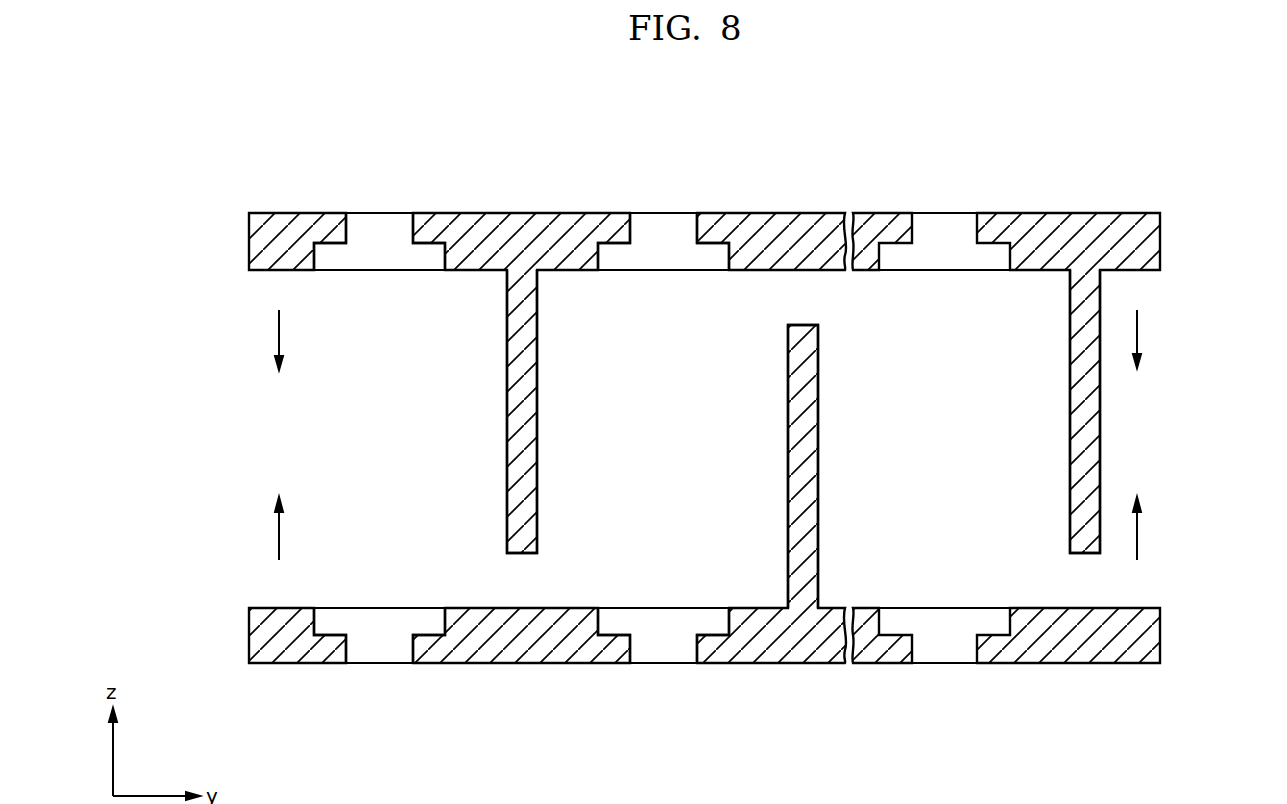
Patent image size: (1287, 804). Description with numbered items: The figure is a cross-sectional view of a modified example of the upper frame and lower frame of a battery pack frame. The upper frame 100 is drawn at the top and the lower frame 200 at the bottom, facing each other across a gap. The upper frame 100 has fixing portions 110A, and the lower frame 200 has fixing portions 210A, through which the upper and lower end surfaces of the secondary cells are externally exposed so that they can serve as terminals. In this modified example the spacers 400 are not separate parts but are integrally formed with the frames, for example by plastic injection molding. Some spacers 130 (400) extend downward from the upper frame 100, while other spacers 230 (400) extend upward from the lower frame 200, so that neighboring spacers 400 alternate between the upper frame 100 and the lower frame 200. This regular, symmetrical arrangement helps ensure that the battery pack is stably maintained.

The upper frame 100 is at (1148, 242).
The lower frame 200 is at (1145, 638).
The fixing portion 110A is at (380, 244).
The fixing portion 210A is at (382, 648).
The spacer 130 is at (528, 441).
The spacer 230 is at (807, 441).
The spacer 400 is at (874, 439).